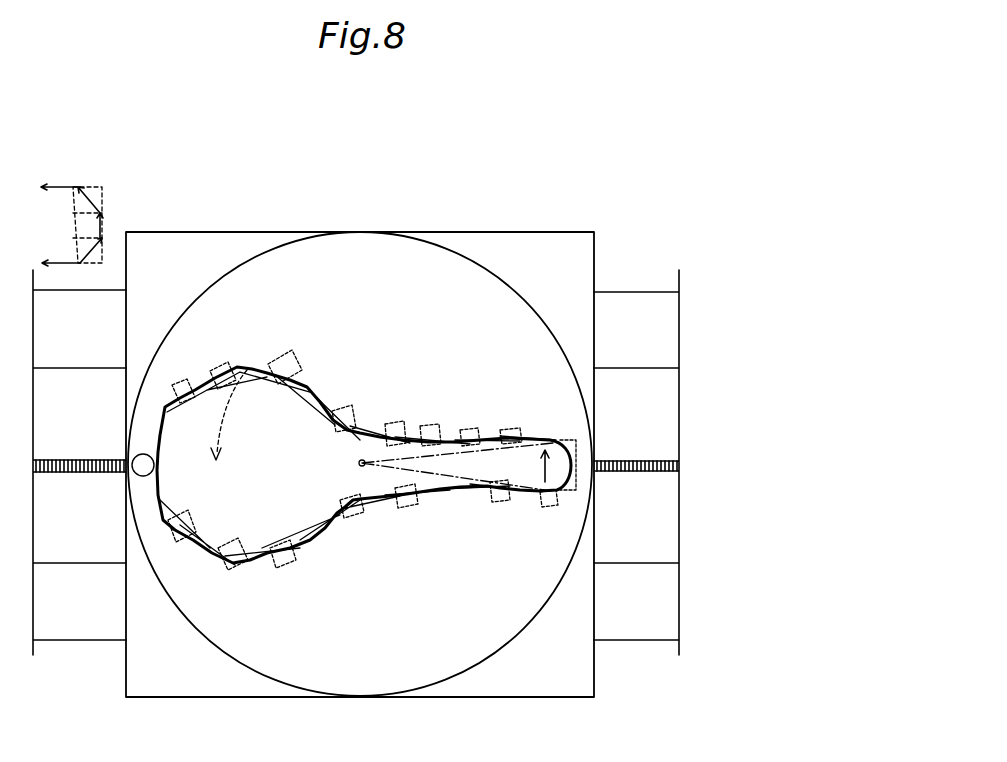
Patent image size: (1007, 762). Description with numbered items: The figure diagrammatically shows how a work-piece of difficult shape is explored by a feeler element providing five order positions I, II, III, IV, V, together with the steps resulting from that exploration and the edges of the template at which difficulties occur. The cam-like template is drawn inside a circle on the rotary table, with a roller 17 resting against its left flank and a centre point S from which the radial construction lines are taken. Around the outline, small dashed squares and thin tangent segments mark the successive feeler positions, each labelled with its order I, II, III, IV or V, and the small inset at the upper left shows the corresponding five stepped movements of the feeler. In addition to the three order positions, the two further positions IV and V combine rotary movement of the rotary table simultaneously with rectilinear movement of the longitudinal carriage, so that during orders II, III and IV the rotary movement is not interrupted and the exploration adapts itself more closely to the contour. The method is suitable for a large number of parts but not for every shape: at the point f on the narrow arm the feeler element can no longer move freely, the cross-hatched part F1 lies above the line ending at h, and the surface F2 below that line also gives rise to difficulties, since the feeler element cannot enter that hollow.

The roller 17 is at (138, 470).
The first order position I is at (265, 372).
The second order position II is at (172, 395).
The third order position III is at (198, 388).
The fourth order position IV is at (400, 438).
The fifth order position V is at (424, 440).
The cam center S is at (358, 464).
The line g— h is at (560, 440).
The cross-hatched part F1 is at (540, 438).
The surface F2 is at (500, 495).
The point f is at (508, 488).